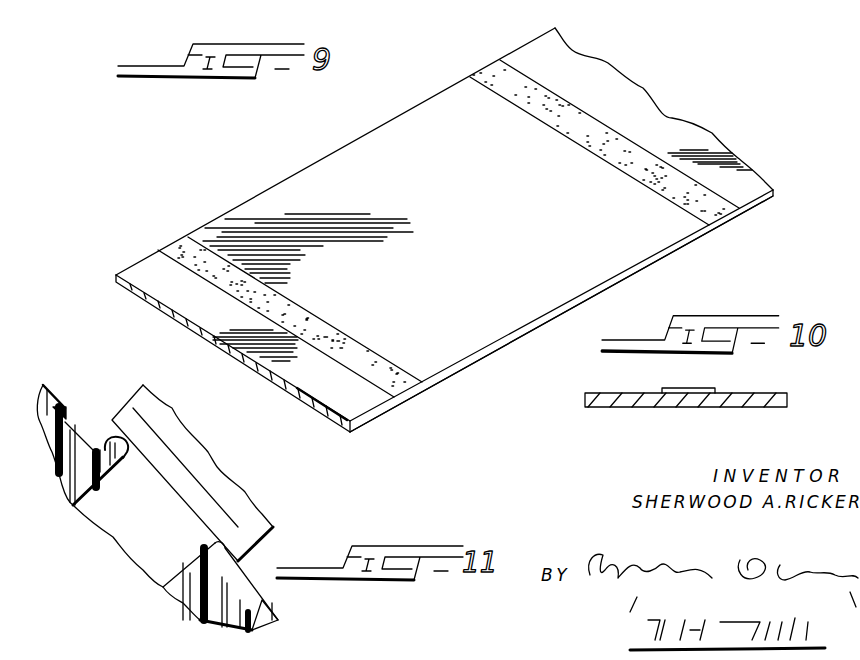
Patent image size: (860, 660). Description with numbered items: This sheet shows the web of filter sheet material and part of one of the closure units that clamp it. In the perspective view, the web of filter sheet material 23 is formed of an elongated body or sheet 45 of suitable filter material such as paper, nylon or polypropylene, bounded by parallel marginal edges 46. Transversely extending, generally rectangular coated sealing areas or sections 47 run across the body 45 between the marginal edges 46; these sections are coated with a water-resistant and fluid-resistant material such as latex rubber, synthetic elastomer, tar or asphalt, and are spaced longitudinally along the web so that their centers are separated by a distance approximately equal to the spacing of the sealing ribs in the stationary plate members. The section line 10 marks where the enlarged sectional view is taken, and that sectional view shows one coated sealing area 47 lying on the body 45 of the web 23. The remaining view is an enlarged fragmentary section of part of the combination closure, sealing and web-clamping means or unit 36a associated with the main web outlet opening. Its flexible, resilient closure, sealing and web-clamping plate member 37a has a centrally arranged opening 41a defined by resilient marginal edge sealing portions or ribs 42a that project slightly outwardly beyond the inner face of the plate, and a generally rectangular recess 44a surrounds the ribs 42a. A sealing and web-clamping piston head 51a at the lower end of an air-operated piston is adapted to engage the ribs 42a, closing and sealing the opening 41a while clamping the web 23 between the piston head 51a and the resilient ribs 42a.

In FIG. 9, the section line 10 is at (554, 163).
In FIG. 9, the web of filter sheet material 23 is at (538, 288).
In FIG. 10, the web of filter sheet material 23 is at (779, 396).
In FIG. 9, the body or sheet 45 is at (480, 328).
In FIG. 10, the body or sheet 45 is at (703, 400).
In FIG. 9, the marginal edges 46 is at (637, 268).
In FIG. 9, the coated sealing areas or sections 47 is at (403, 383).
In FIG. 10, the coated sealing areas or sections 47 is at (703, 388).
In FIG. 11, the combination closure, sealing and web-clamping means or unit 36a is at (220, 467).
In FIG. 11, the closure, sealing and web-clamping plate member 37a is at (55, 485).
In FIG. 11, the opening 41a is at (165, 580).
In FIG. 11, the marginal edge sealing portions or ribs 42a is at (102, 435).
In FIG. 11, the recess 44a is at (237, 596).
In FIG. 11, the sealing and web-clamping piston head 51a is at (237, 530).